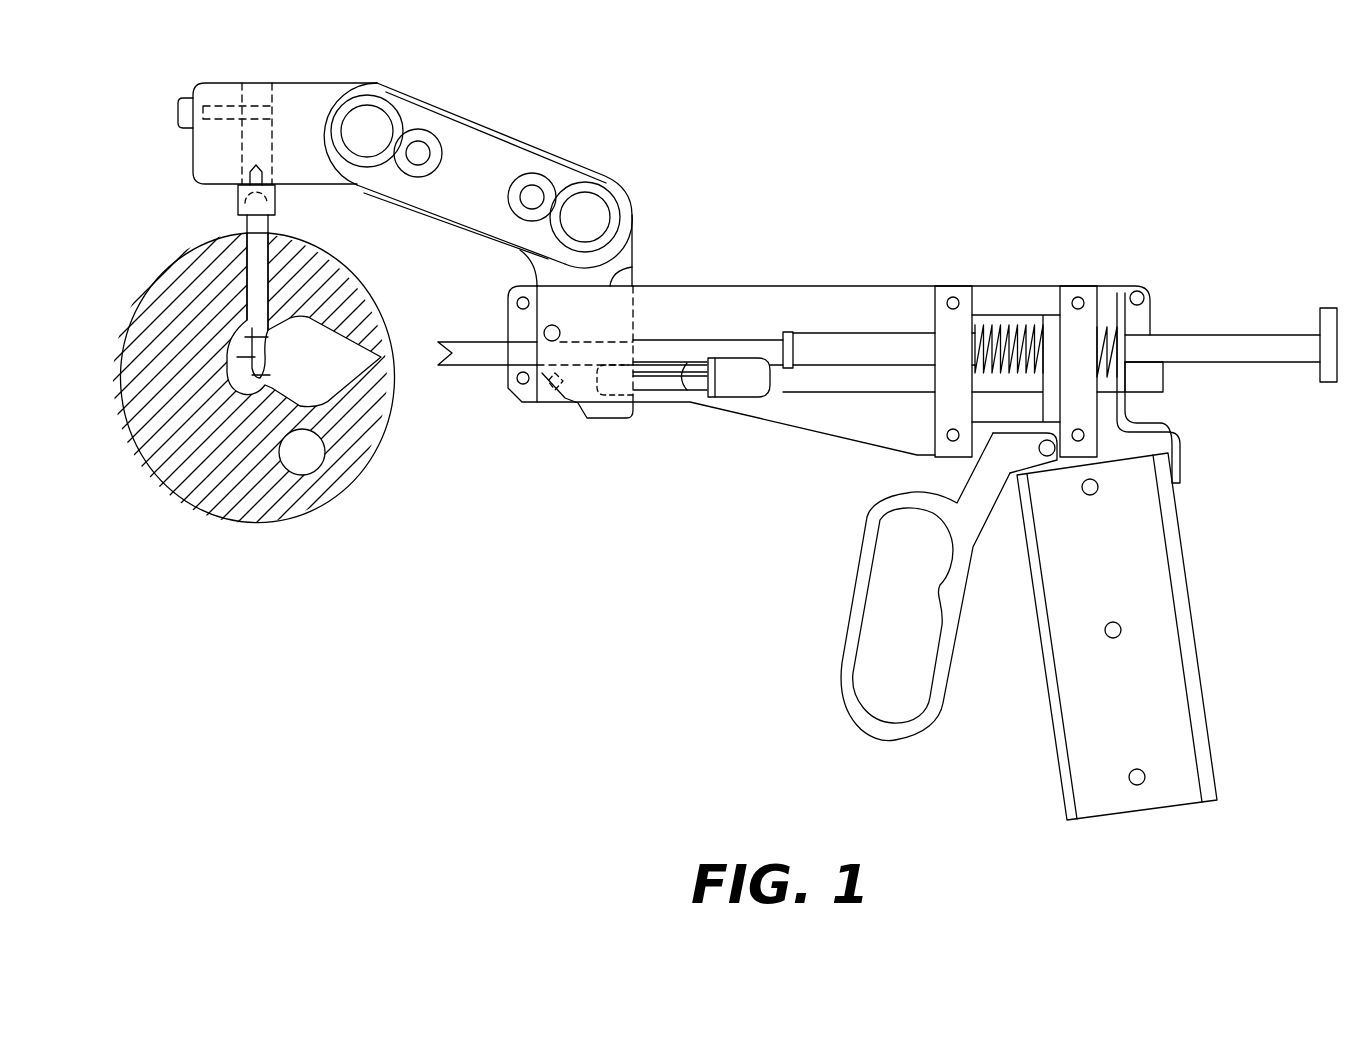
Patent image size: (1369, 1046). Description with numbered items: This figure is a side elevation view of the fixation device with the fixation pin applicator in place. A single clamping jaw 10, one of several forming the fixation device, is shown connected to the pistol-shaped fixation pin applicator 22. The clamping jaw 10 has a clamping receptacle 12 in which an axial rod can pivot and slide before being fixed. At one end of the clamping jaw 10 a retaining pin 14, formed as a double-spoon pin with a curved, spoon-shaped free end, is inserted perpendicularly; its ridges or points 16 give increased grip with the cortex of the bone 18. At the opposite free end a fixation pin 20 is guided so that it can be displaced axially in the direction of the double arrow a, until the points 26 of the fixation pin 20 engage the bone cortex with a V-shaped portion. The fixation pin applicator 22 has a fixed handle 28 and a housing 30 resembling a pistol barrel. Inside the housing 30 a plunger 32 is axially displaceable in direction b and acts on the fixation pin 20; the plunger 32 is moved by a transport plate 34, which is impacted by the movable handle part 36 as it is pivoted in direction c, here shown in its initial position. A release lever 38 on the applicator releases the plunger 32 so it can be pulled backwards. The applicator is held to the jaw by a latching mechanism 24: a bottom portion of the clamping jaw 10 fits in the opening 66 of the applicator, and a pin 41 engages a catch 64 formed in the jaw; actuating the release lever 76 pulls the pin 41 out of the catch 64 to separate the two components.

The clamping jaw 10 is at (288, 76).
The clamping receptacle 12 is at (377, 123).
The retaining pin 14 is at (256, 222).
The ridges or points 16 is at (266, 388).
The bone 18 is at (320, 386).
The fixation pin 20 is at (707, 352).
The fixation pin applicator 22 is at (1041, 279).
The latching mechanism 24 is at (673, 387).
The points 26 is at (453, 340).
The fixed handle 28 is at (1173, 678).
The housing 30 is at (873, 303).
The plunger 32 is at (1290, 353).
The transport plate 34 is at (1052, 325).
The movable handle part 36 is at (840, 680).
The release lever 38 is at (1176, 453).
The pin 41 is at (652, 383).
The catch 64 is at (603, 393).
The opening 66 is at (632, 267).
The release lever 76 is at (742, 395).